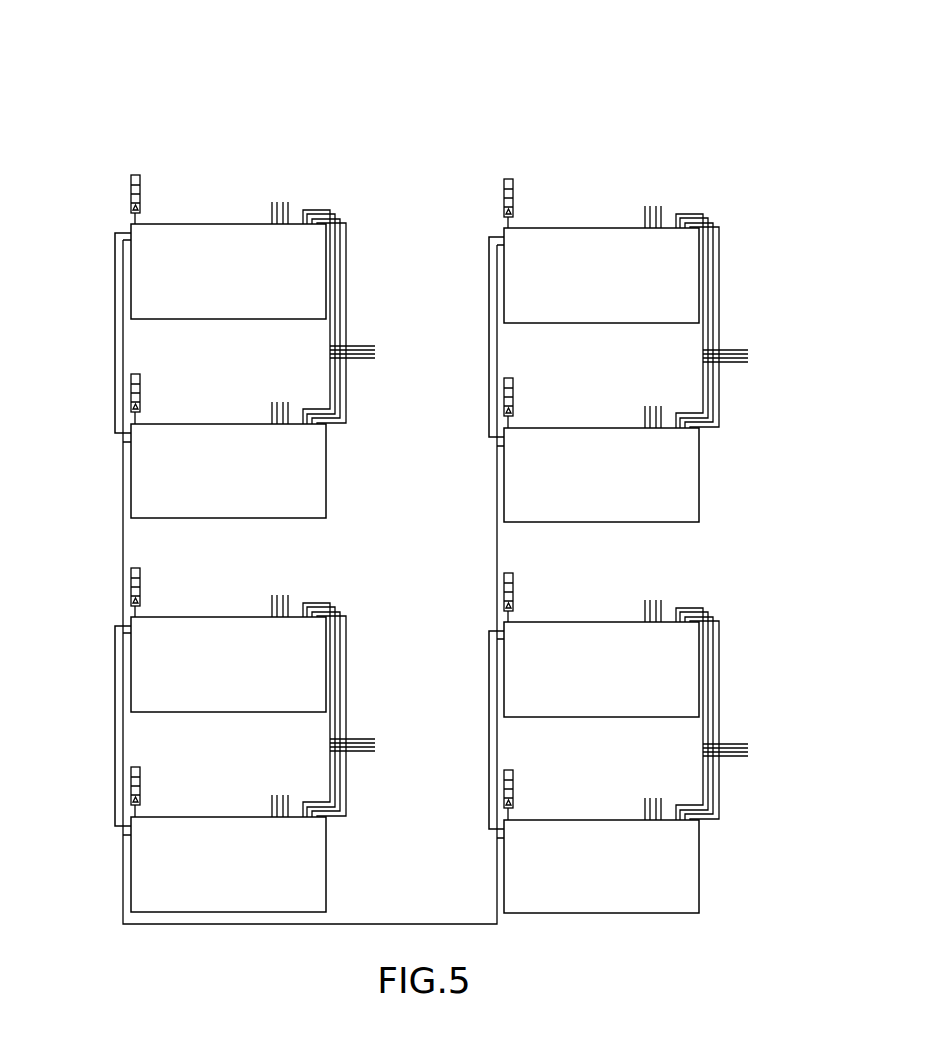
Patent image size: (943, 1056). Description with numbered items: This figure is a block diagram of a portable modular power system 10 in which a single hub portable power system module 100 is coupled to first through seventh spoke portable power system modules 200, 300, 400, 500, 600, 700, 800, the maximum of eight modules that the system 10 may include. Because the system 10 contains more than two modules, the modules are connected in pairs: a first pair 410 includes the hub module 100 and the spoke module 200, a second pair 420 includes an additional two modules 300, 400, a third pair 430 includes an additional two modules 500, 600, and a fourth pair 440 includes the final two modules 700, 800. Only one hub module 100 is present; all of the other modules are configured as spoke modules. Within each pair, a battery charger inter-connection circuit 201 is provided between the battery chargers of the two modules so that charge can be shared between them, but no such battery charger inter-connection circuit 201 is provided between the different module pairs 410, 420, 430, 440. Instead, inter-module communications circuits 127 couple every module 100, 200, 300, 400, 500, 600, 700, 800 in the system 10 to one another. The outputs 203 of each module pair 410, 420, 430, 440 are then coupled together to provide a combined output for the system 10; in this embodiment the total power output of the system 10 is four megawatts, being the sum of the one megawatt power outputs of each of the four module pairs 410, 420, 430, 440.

The portable modular power system 10 is at (113, 88).
The hub portable power system module 100 is at (318, 247).
The first spoke portable power system module 200 is at (318, 448).
The second spoke portable power system module 300 is at (318, 640).
The third spoke portable power system module 400 is at (318, 840).
The fourth spoke portable power system module 500 is at (693, 251).
The fifth spoke portable power system module 600 is at (693, 453).
The sixth spoke portable power system module 700 is at (692, 644).
The seventh spoke portable power system module 800 is at (692, 843).
The inter-module communications circuit 127 is at (121, 533).
The battery charger inter-connection circuit 201 is at (115, 277).
The output 203 is at (350, 342).
The first module pair 410 is at (95, 348).
The second module pair 420 is at (95, 728).
The third module pair 430 is at (735, 297).
The fourth module pair 440 is at (730, 688).